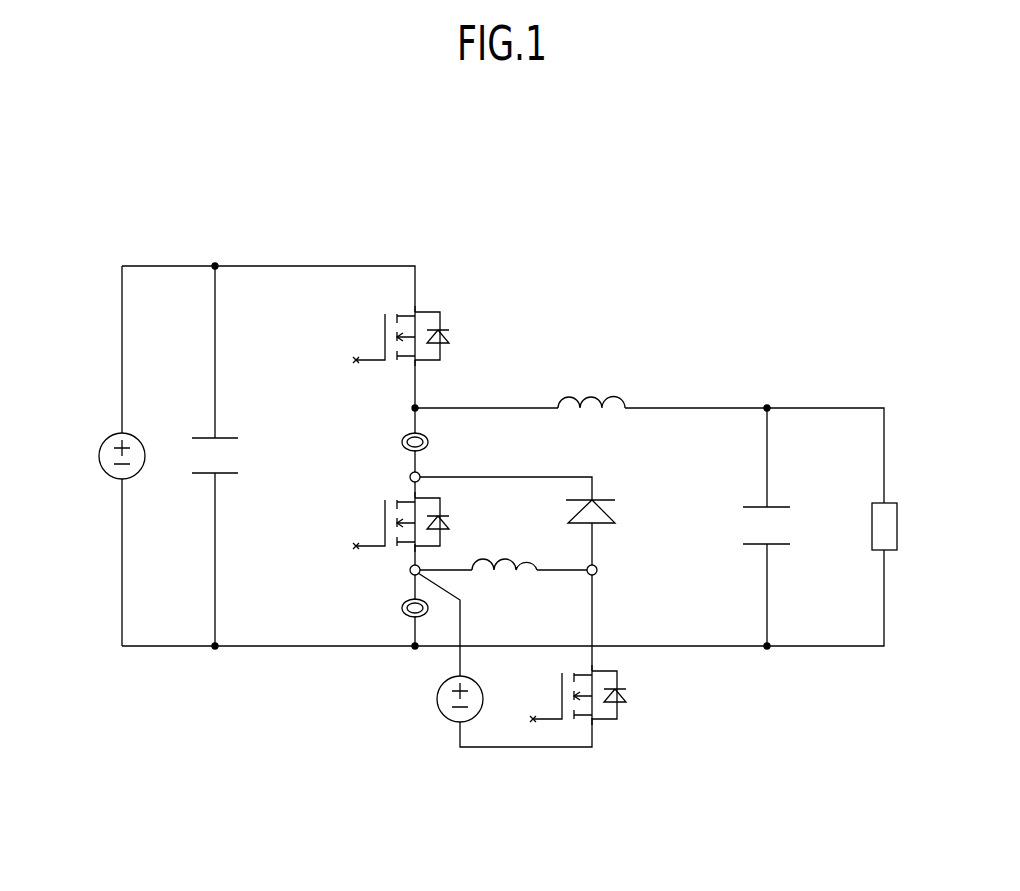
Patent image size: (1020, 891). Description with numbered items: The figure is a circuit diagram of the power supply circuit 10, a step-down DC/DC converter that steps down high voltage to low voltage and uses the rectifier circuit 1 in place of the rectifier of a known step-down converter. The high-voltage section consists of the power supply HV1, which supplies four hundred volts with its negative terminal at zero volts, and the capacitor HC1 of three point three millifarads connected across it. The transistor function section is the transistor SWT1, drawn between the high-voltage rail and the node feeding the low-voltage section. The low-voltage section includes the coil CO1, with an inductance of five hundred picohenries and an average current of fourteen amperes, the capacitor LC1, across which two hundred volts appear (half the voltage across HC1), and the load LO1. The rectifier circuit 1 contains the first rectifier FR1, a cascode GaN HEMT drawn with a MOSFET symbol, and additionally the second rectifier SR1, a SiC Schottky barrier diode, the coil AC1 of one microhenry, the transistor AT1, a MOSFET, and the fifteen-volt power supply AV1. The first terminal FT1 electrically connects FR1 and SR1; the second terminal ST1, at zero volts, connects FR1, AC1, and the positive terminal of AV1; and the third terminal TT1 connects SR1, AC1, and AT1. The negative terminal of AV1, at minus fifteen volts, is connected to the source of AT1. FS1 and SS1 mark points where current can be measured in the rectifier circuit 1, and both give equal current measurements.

The power supply HV1 is at (100, 440).
The capacitor HC1 is at (205, 435).
The transistor SWT1 is at (452, 336).
The current measurement point FS1 is at (400, 443).
The first terminal FT1 is at (408, 477).
The first rectifier FR1 is at (452, 522).
The second terminal ST1 is at (408, 570).
The current measurement point SS1 is at (400, 608).
The power supply AV1 is at (437, 699).
The transistor AT1 is at (630, 694).
The coil CO1 is at (568, 413).
The coil AC1 is at (524, 575).
The second rectifier SR1 is at (616, 518).
The third terminal TT1 is at (598, 570).
The capacitor LC1 is at (752, 505).
The load LO1 is at (900, 520).
The power supply circuit 10 is at (850, 263).
The rectifier circuit 1 is at (705, 695).